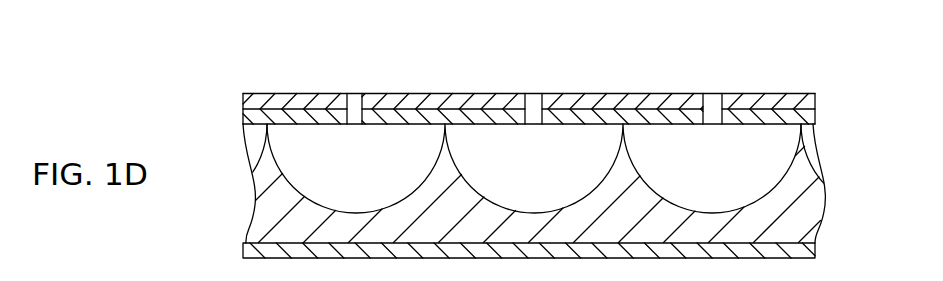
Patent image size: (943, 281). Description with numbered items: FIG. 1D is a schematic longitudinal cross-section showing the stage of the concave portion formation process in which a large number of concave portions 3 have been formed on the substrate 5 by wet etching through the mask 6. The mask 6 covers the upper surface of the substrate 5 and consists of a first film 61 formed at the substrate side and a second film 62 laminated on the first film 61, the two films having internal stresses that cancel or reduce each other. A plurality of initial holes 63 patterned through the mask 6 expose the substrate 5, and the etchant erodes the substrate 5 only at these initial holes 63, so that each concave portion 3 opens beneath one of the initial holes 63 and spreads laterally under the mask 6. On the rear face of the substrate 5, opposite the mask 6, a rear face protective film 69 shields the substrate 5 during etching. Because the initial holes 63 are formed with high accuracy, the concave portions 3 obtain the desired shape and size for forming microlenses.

The concave portion 3 is at (328, 163).
The substrate 5 is at (534, 134).
The mask 6 is at (506, 87).
The first film 61 is at (250, 115).
The second film 62 is at (255, 100).
The initial hole 63 is at (355, 102).
The rear face protective film 69 is at (802, 252).